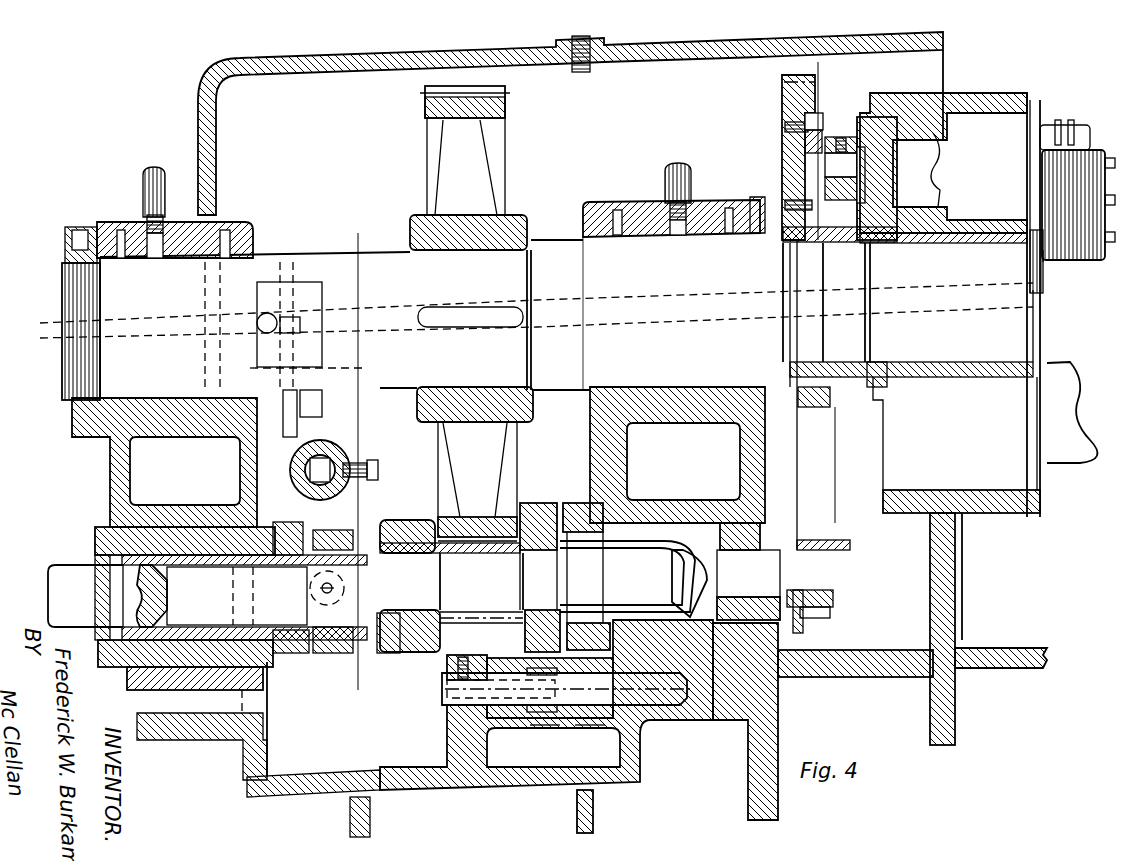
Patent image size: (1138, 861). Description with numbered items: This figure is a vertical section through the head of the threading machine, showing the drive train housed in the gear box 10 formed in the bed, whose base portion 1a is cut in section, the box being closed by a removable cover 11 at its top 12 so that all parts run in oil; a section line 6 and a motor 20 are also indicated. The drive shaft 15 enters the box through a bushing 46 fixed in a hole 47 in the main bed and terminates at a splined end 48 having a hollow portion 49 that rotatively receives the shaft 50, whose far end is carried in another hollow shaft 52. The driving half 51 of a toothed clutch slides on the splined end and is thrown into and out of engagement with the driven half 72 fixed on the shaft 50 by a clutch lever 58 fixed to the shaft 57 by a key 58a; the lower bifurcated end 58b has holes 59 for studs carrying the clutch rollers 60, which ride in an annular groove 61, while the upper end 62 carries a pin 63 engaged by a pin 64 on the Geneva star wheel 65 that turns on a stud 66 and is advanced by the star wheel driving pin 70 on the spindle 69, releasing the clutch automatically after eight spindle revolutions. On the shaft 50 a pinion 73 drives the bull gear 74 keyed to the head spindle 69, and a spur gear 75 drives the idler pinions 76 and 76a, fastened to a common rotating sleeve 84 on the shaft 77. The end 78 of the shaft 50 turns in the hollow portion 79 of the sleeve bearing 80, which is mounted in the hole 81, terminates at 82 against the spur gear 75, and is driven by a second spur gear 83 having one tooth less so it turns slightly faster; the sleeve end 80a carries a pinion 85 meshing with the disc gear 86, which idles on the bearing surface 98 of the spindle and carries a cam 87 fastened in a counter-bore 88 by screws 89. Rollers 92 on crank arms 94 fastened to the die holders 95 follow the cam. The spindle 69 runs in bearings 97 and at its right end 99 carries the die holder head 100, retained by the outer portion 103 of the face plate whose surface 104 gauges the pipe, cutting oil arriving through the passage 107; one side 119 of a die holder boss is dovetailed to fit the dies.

The base of housing 1a is at (285, 782).
The section line 6 is at (345, 235).
The gear box 10 is at (570, 123).
The removable cover 11 is at (818, 62).
The top 12 is at (818, 62).
The drive shaft 15 is at (80, 585).
The motor 20 is at (1095, 156).
The bushing 46 is at (127, 668).
The hole 47 is at (133, 692).
The splined end of shaft 48 is at (345, 640).
The hollow portion 49 is at (257, 520).
The shaft 50 is at (297, 600).
The driving half of toothed clutch 51 is at (350, 525).
The hollow shaft 52 is at (712, 630).
The shaft 57 is at (360, 465).
The clutch lever 58 is at (340, 450).
The key 58a is at (305, 465).
The bifurcated end of clutch lever 58b is at (318, 660).
The holes 59 is at (345, 588).
The clutch rollers 60 is at (395, 525).
The annular groove 61 is at (333, 530).
The upper end of clutch lever 62 is at (340, 388).
The pin 63 is at (306, 415).
The pin 64 is at (293, 350).
The Geneva star wheel 65 is at (295, 265).
The stud 66 is at (250, 322).
The head spindle 69 is at (540, 255).
The star wheel driving pin 70 is at (81, 331).
The driven half of clutch 72 is at (415, 640).
The pinion 73 is at (484, 621).
The bull gear 74 is at (485, 163).
The spur gear 75 is at (532, 512).
The idler pinion 76 is at (545, 728).
The idler pinion 76a is at (595, 728).
The shaft 77 is at (668, 710).
The end of shaft 78 is at (627, 576).
The hollow portion of sleeve bearing 79 is at (692, 582).
The sleeve bearing 80 is at (725, 535).
The end of sleeve bearing 80a is at (835, 580).
The hole in main frame 81 is at (690, 640).
The end of sleeve 82 is at (572, 520).
The second spur gear 83 is at (640, 470).
The rotating sleeve 84 is at (566, 675).
The pinion 85 is at (832, 612).
The disc gear 86 is at (790, 85).
The cam 87 is at (813, 123).
The counter-bore 88 is at (790, 122).
The screws 89 is at (795, 133).
The rollers 92 is at (782, 152).
The crank arms 94 is at (838, 142).
The die holders 95 is at (1045, 135).
The bearings 97 is at (252, 240).
The bearing surface 98 is at (790, 280).
The right end of spindle 99 is at (1030, 322).
The die holder head 100 is at (965, 98).
The outer portion of face plate 103 is at (1050, 365).
The surface of plate 104 is at (1043, 330).
The passage 107 is at (953, 308).
The side of boss 119 is at (1045, 255).